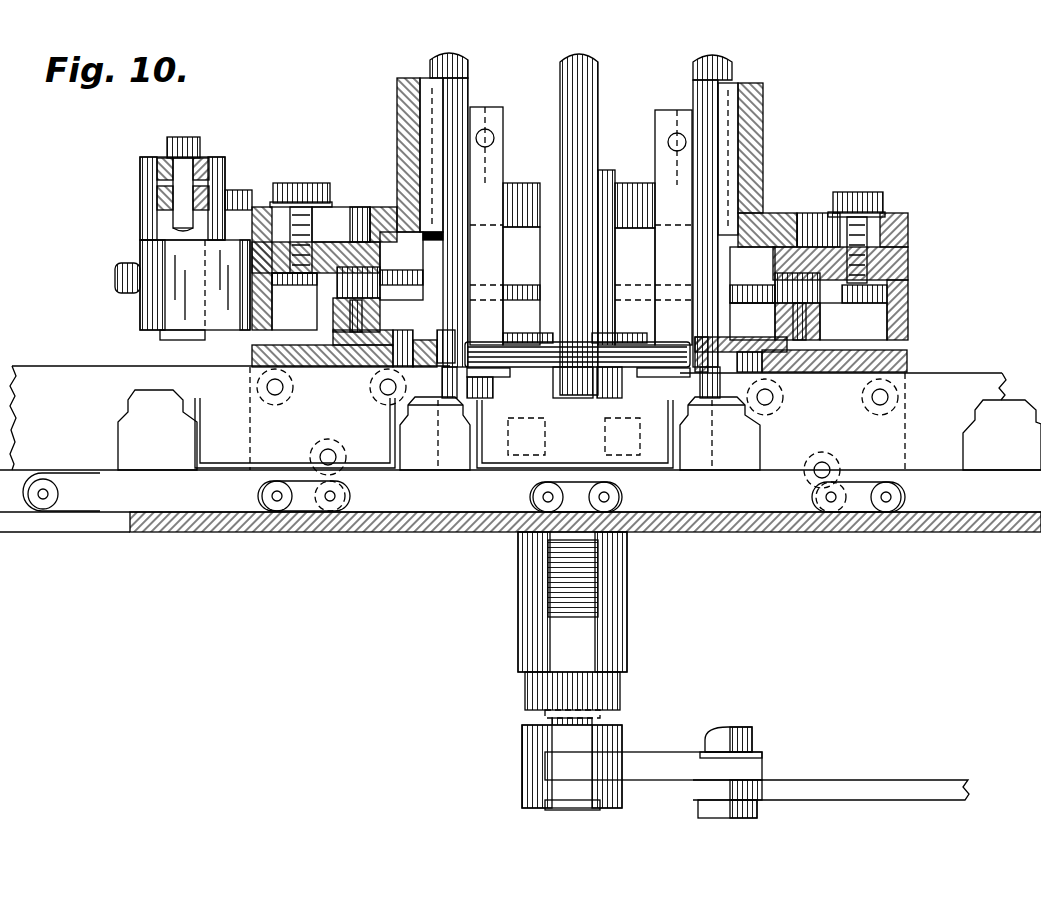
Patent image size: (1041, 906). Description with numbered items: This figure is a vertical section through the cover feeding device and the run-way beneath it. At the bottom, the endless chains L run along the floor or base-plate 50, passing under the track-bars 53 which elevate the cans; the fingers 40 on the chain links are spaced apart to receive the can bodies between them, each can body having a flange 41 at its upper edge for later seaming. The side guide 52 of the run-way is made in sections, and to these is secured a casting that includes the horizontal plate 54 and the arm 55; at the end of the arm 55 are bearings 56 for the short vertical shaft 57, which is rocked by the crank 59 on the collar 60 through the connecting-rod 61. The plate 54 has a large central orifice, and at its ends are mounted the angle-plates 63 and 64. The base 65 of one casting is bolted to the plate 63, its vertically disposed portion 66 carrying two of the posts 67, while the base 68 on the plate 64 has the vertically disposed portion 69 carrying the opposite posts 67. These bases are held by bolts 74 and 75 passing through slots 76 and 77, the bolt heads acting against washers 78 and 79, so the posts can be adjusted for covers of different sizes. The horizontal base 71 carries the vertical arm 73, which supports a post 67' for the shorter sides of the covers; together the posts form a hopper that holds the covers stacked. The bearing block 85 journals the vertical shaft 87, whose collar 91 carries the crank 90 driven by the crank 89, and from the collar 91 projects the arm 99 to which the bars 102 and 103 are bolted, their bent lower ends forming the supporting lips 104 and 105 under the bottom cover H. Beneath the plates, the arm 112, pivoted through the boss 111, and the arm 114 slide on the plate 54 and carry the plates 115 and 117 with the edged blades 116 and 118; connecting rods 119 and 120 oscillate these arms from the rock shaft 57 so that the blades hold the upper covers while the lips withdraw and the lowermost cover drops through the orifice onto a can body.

The finger 40 is at (140, 396).
The flange 41 is at (204, 402).
The floor or base-plate 50 is at (428, 533).
The side guide 52 is at (978, 375).
The track-bars 53 is at (24, 476).
The horizontal plate 54 is at (908, 360).
The arm 55 is at (562, 562).
The bearings 56 is at (628, 600).
The short vertical shaft 57 is at (602, 714).
The crank 59 is at (660, 758).
The collar 60 is at (522, 746).
The connecting-rod 61 is at (843, 781).
The angle-plate 63 is at (265, 245).
The angle-plate 64 is at (908, 265).
The base 65 is at (908, 215).
The vertically disposed portion 66 is at (764, 140).
The posts 67 is at (606, 210).
The posts 67' is at (603, 224).
The base 68 is at (380, 218).
The vertically disposed portion 69 is at (400, 96).
The horizontal base 71 is at (628, 300).
The vertical arm 73 is at (608, 176).
The bolt 74 is at (878, 210).
The bolt 75 is at (300, 235).
The slot 76 is at (815, 225).
The slot 77 is at (335, 222).
The washer 78 is at (850, 208).
The washer 79 is at (290, 205).
The bearing block 85 is at (150, 312).
The vertical shaft 87 is at (194, 332).
The crank 89 is at (202, 157).
The crank 90 is at (157, 200).
The collar 91 is at (162, 195).
The arm 99 is at (522, 192).
The vertical bar 102 is at (665, 238).
The vertical bar 103 is at (488, 273).
The supporting lip 104 is at (657, 378).
The supporting lip 105 is at (500, 378).
The boss 111 is at (805, 292).
The arm 112 is at (820, 326).
The arm 114 is at (340, 310).
The plate 115 is at (746, 342).
The edged blade 116 is at (716, 434).
The plate 117 is at (390, 336).
The edged blade 118 is at (446, 394).
The connecting rod 119 is at (748, 290).
The connecting rod 120 is at (395, 285).
The carrier C is at (434, 433).
The bottom cover H is at (660, 345).
The endless chain L is at (106, 496).